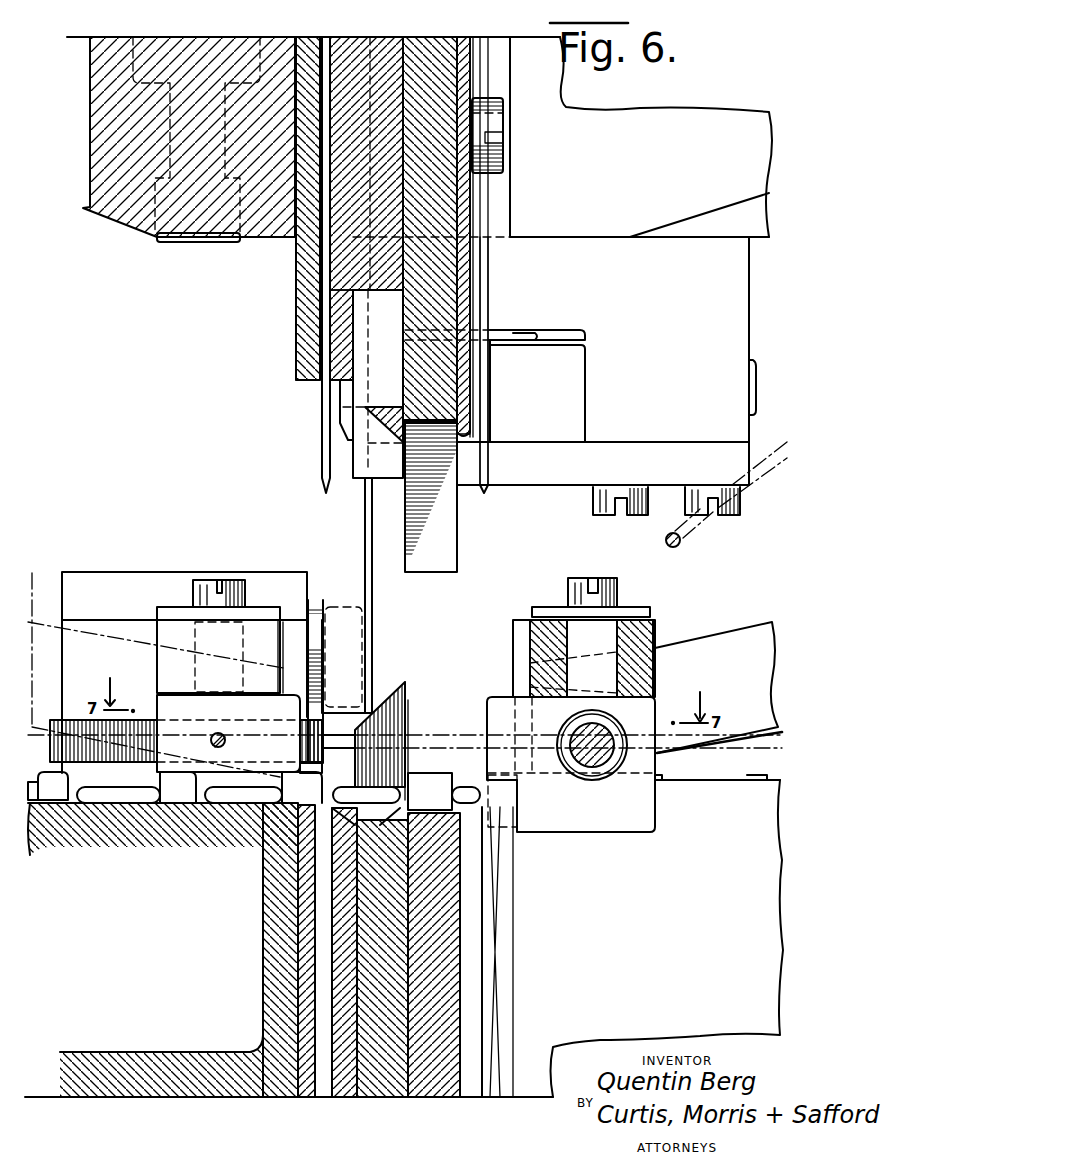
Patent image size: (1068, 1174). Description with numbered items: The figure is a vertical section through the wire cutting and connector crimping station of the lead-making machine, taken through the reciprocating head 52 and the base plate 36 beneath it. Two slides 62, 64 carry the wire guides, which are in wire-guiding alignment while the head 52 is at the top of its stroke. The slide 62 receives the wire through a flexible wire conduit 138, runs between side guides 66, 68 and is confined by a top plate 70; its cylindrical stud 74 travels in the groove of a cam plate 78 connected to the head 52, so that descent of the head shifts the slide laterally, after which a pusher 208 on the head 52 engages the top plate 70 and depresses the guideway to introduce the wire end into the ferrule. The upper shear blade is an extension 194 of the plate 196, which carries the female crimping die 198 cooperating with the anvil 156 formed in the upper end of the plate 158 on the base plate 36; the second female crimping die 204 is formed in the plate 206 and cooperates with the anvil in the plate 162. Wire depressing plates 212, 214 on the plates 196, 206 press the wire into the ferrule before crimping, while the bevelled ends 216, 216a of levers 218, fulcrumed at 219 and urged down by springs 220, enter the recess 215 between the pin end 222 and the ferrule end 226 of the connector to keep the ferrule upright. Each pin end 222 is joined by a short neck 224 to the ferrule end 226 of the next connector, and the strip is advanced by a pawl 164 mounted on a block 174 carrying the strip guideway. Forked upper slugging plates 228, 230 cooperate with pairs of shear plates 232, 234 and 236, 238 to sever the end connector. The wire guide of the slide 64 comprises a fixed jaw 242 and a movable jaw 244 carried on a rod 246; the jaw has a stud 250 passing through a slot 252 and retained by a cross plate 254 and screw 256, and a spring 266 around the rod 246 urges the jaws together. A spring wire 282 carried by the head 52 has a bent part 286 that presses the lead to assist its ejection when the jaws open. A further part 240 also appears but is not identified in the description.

The base plate 36 is at (33, 1097).
The reciprocating head 52 is at (67, 37).
The slide 62 is at (165, 667).
The slide 64 is at (640, 663).
The side guide 66 is at (283, 635).
The side guide 68 is at (157, 630).
The top plate 70 is at (173, 575).
The cylindrical stud 74 is at (313, 630).
The cam plate 78 is at (337, 533).
The flexible wire conduit 138 is at (70, 727).
The anvil 156 is at (447, 823).
The plate 158 is at (437, 1065).
The plate 162 is at (382, 1080).
The pawl 164 is at (32, 600).
The block 174 is at (62, 840).
The extension 194 is at (440, 528).
The plate 196 is at (435, 208).
The female crimping die 198 is at (430, 418).
The female crimping die 204 is at (343, 408).
The plate 206 is at (373, 263).
The pusher 208 is at (170, 242).
The plate 212 is at (462, 275).
The plate 214 is at (345, 390).
The recess 215 is at (397, 792).
The bevelled end 216 is at (385, 407).
The bevelled end 216a is at (437, 421).
The lever 218 is at (570, 387).
The fulcrum 219 is at (757, 372).
The spring 220 is at (527, 332).
The pin end 222 is at (238, 803).
The neck 224 is at (197, 803).
The ferrule end 226 is at (163, 805).
The upper slugging plate 228 is at (327, 455).
The upper slugging plate 230 is at (485, 460).
The shear plate 232 is at (307, 945).
The shear plate 234 is at (340, 982).
The shear plate 236 is at (507, 945).
The shear plate 238 is at (470, 977).
The roller 240 is at (300, 833).
The fixed jaw 242 is at (518, 660).
The movable jaw 244 is at (500, 713).
The rod 246 is at (598, 768).
The stud 250 is at (578, 638).
The slot 252 is at (640, 643).
The cross plate 254 is at (550, 610).
The screw 256 is at (580, 585).
The spring 266 is at (582, 777).
The spring wire 282 is at (775, 470).
The bent part 286 is at (681, 543).